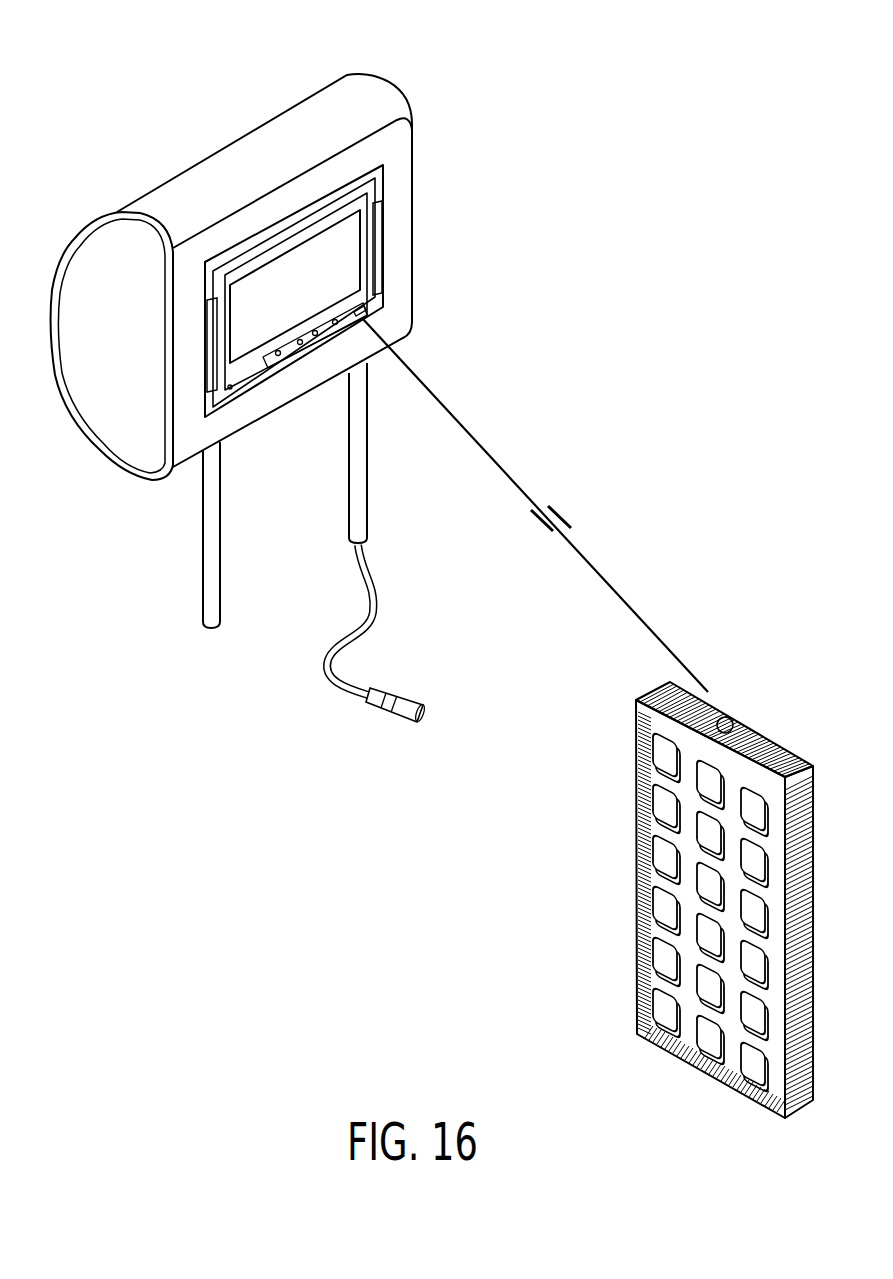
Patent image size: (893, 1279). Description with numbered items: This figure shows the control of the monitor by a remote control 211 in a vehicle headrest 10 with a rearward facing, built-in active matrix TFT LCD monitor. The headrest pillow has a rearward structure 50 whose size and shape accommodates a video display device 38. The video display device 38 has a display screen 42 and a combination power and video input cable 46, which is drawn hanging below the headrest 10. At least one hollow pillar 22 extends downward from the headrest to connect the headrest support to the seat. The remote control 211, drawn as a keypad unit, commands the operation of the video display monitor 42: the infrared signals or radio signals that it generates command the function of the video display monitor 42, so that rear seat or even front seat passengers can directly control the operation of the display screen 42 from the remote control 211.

The video headrest assembly 10 is at (390, 85).
The rearward structure 50 is at (403, 223).
The display screen 42 is at (357, 260).
The video display device 38 is at (387, 306).
The hollow pillar 22 is at (368, 478).
The combination power and video input cable 46 is at (377, 615).
The remote control 211 is at (633, 833).